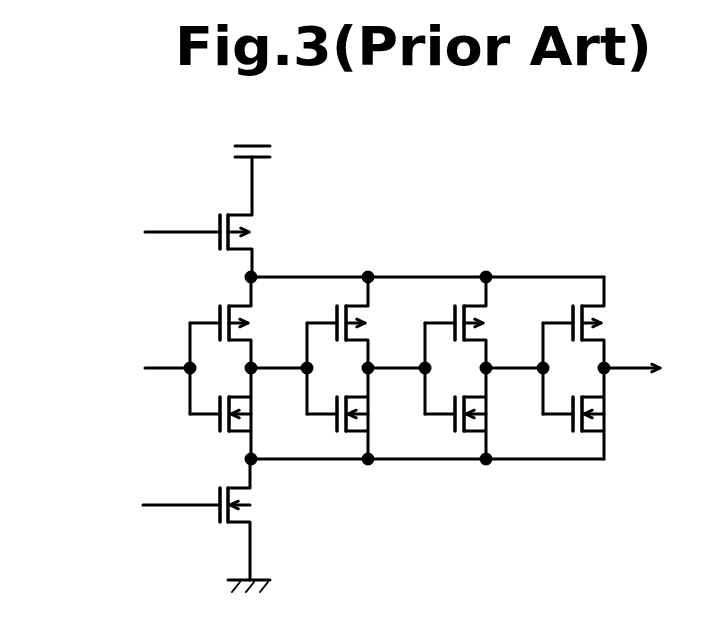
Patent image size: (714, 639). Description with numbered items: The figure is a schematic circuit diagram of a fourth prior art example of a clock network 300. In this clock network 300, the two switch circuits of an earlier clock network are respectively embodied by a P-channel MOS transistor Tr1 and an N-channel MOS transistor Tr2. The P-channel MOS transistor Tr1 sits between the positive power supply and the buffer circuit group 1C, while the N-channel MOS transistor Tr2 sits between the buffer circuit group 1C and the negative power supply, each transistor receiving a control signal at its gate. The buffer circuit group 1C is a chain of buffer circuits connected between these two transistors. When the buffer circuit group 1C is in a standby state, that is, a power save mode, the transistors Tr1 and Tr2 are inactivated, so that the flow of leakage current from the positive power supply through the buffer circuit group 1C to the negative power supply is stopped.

The clock network 300 is at (163, 173).
The buffer circuit group 1C is at (512, 245).
The P-channel MOS transistor Tr1 is at (247, 246).
The N-channel MOS transistor Tr2 is at (247, 519).